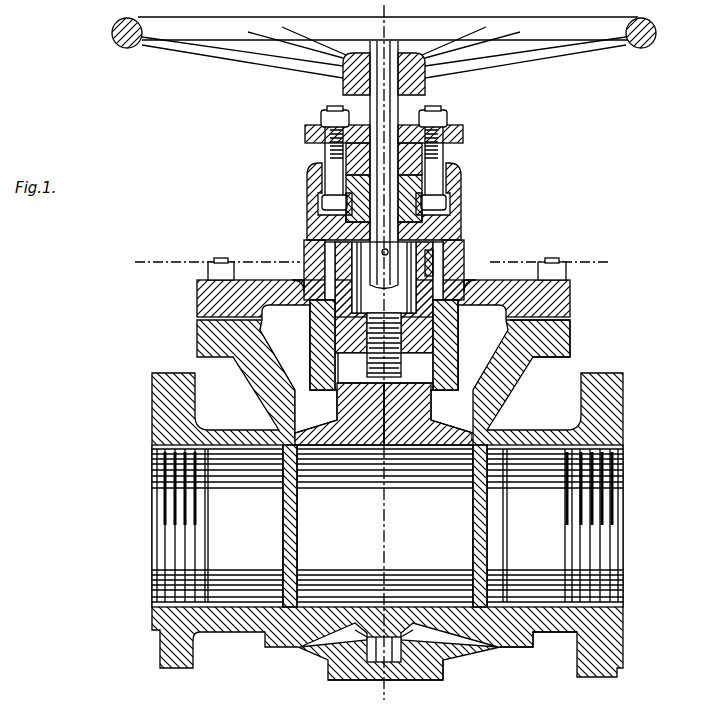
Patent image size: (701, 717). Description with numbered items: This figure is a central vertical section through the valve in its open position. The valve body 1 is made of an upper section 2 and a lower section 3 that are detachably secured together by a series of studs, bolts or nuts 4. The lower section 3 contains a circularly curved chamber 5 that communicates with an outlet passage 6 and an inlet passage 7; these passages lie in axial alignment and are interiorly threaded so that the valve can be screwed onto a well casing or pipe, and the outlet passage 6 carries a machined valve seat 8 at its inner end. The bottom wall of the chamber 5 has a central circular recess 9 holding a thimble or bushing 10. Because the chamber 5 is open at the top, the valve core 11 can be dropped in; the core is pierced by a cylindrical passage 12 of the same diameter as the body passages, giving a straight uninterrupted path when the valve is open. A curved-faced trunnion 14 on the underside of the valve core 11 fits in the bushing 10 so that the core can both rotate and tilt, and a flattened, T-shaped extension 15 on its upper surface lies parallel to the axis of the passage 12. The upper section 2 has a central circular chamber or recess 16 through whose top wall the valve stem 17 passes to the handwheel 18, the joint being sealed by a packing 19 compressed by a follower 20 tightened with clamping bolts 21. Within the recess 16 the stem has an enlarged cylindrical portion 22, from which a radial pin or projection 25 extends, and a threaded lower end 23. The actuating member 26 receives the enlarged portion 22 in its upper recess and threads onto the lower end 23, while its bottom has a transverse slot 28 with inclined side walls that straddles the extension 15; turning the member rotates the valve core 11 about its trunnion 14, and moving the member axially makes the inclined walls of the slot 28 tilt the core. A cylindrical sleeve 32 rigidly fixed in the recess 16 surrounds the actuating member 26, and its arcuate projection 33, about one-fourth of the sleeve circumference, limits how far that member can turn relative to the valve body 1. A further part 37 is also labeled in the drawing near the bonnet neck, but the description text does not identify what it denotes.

The valve body 1 is at (617, 395).
The upper section 2 is at (372, 263).
The lower section 3 is at (384, 359).
The studs, bolts or nuts 4 is at (210, 271).
The chamber 5 is at (578, 343).
The outlet passage 6 is at (623, 548).
The inlet passage 7 is at (152, 543).
The valve seat 8 is at (533, 632).
The circular recess 9 is at (417, 681).
The thimble or bushing 10 is at (444, 679).
The valve core 11 is at (448, 429).
The passage 12 is at (385, 526).
The trunnion 14 is at (367, 665).
The flattened extension 15 is at (347, 414).
The chamber or recess 16 is at (463, 230).
The valve stem 17 is at (390, 107).
The valve actuating wheel or handle 18 is at (576, 33).
The packing 19 is at (423, 192).
The follower 20 is at (452, 125).
The clamping bolts 21 is at (322, 165).
The enlarged cylindrical portion 22 is at (435, 218).
The threaded lower end 23 is at (452, 340).
The pin or projection 25 is at (317, 243).
The actuating member 26 is at (466, 272).
The transverse slot 28 is at (440, 368).
The cylindrical sleeve 32 is at (312, 336).
The arcuate projection 33 is at (460, 247).
The clearance gap 37 is at (323, 253).